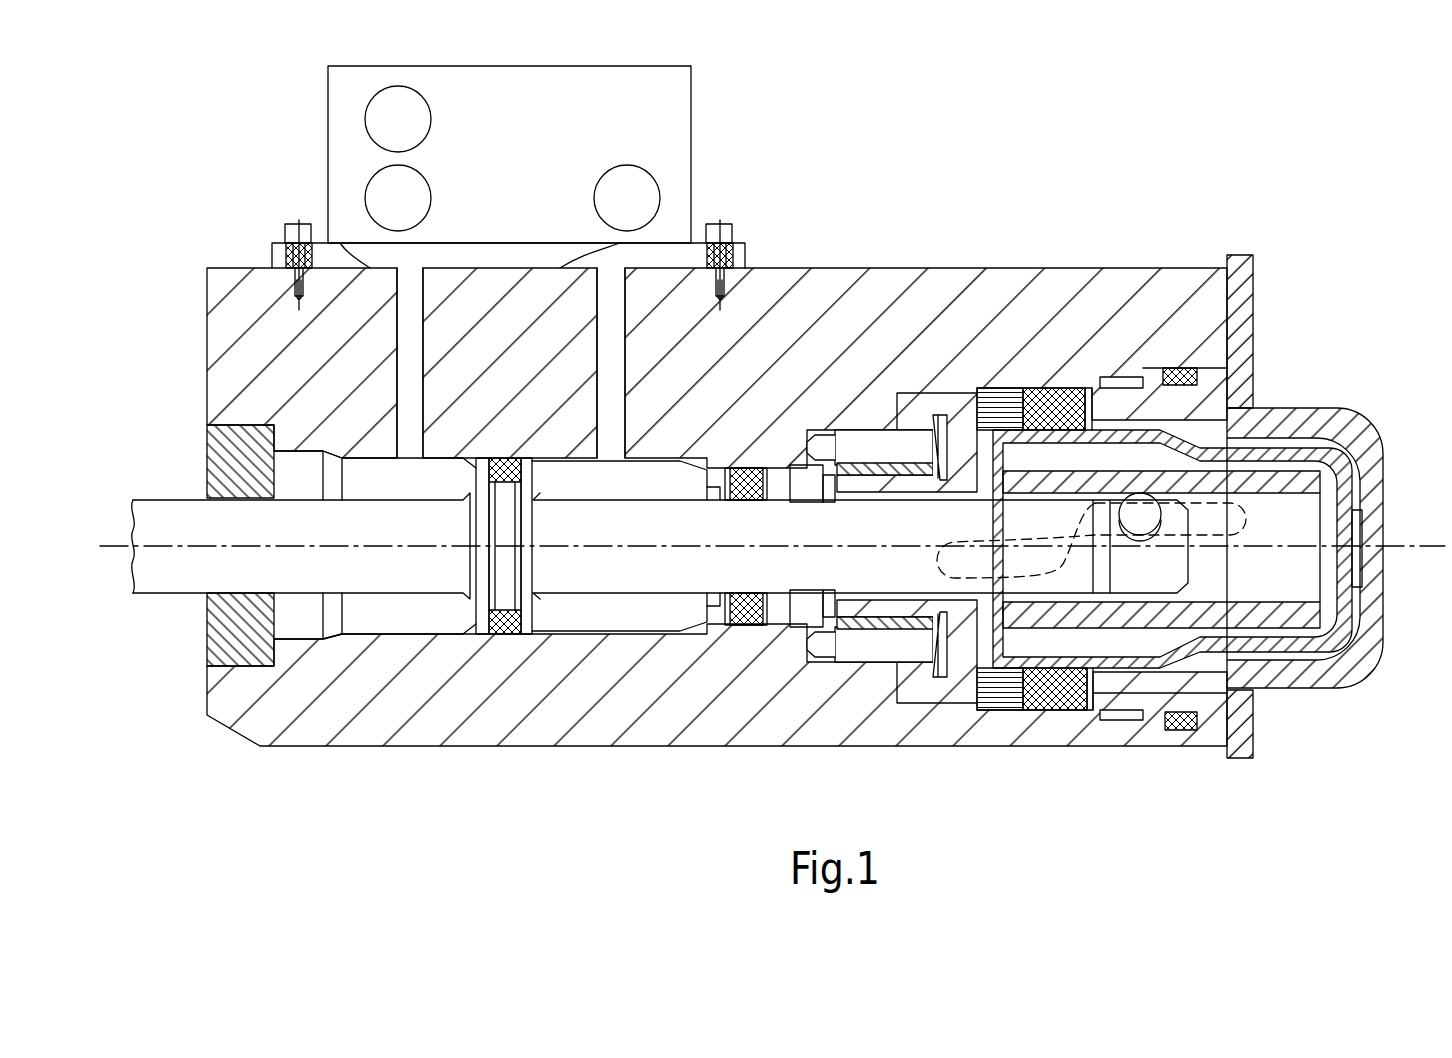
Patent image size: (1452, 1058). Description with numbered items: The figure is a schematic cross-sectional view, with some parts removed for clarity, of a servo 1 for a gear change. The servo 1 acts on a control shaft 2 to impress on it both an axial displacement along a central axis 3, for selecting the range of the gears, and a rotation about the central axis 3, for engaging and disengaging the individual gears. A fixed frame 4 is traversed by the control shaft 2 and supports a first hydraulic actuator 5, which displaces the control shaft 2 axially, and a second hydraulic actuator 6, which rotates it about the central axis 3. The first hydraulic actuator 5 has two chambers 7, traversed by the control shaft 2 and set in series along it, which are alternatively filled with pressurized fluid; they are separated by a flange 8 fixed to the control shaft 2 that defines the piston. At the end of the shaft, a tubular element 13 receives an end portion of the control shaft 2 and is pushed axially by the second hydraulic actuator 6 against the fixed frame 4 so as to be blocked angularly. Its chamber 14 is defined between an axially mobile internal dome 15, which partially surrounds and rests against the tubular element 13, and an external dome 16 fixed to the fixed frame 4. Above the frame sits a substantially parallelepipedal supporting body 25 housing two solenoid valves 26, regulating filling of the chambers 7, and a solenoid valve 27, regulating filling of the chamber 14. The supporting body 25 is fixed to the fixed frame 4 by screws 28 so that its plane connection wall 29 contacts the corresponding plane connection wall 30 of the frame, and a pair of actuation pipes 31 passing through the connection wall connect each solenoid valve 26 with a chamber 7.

The servo 1 is at (415, 777).
The control shaft 2 is at (162, 510).
The central axis 3 is at (1405, 552).
The fixed frame 4 is at (718, 731).
The first hydraulic actuator 5 is at (488, 757).
The second hydraulic actuator 6 is at (1034, 762).
The chambers 7 is at (380, 616).
The flange 8 is at (528, 623).
The tubular element 13 is at (1317, 478).
The chamber 14 is at (1356, 537).
The internal dome 15 is at (1323, 647).
The external dome 16 is at (1335, 417).
The supporting body 25 is at (768, 169).
The solenoid valves 26 is at (390, 188).
The solenoid valve 27 is at (390, 113).
The screws 28 is at (285, 232).
The plane connection wall 29 is at (535, 269).
The plane connection wall 30 is at (372, 267).
The actuation pipes 31 is at (410, 371).